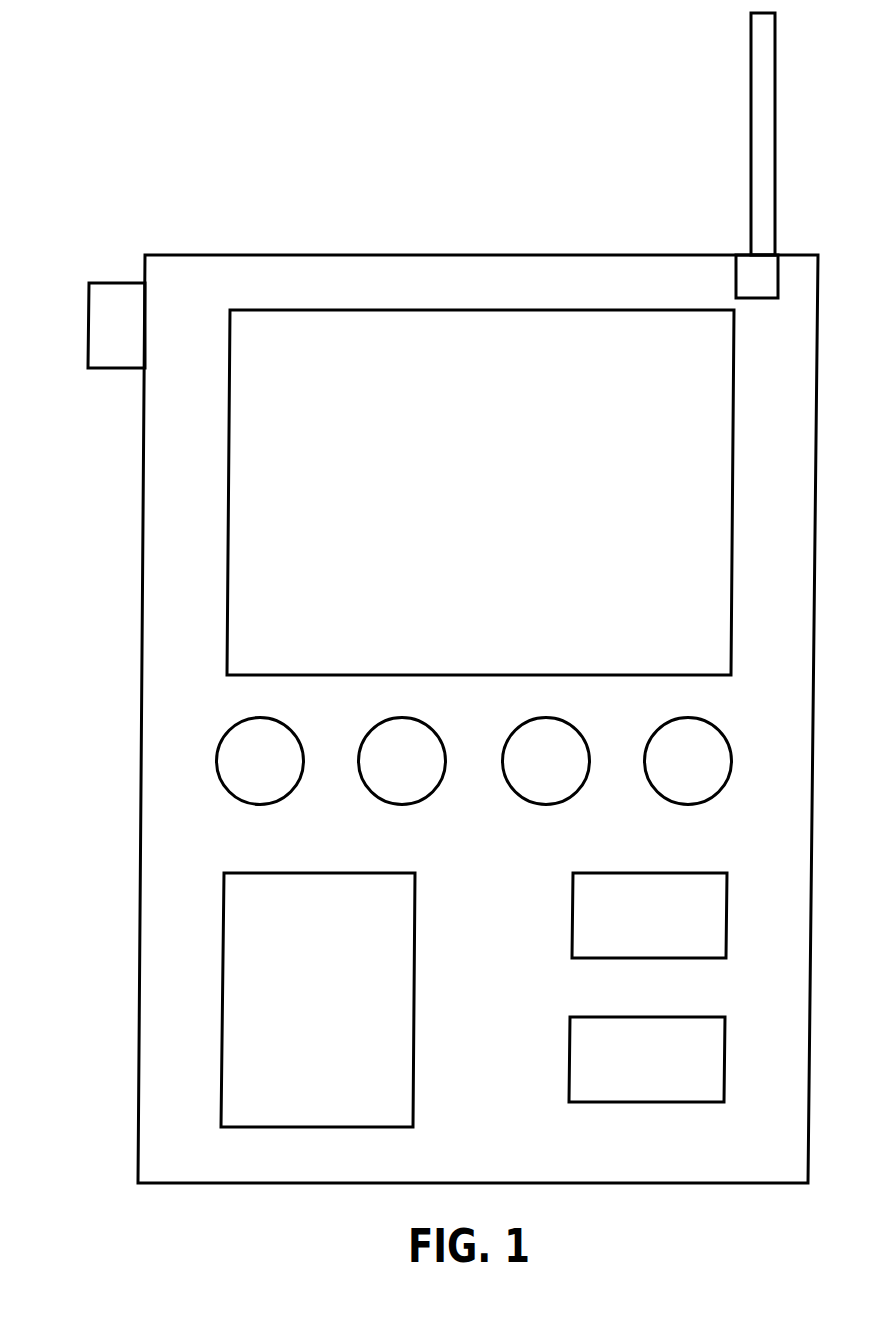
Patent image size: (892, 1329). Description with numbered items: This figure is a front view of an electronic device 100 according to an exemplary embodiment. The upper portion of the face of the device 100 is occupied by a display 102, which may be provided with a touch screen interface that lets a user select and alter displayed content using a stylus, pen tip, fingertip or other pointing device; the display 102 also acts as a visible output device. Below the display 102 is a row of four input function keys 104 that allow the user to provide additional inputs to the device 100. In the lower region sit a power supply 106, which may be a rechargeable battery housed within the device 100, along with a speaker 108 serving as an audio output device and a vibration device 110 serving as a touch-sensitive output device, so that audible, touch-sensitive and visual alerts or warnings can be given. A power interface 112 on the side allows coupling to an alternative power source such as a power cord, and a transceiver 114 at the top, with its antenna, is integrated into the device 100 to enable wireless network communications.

The electronic device 100 is at (548, 105).
The display 102 is at (493, 480).
The input function keys 104 is at (718, 728).
The power supply 106 is at (222, 958).
The speaker 108 is at (705, 872).
The vibration device 110 is at (702, 1013).
The power interface 112 is at (88, 325).
The transceiver 114 is at (748, 267).